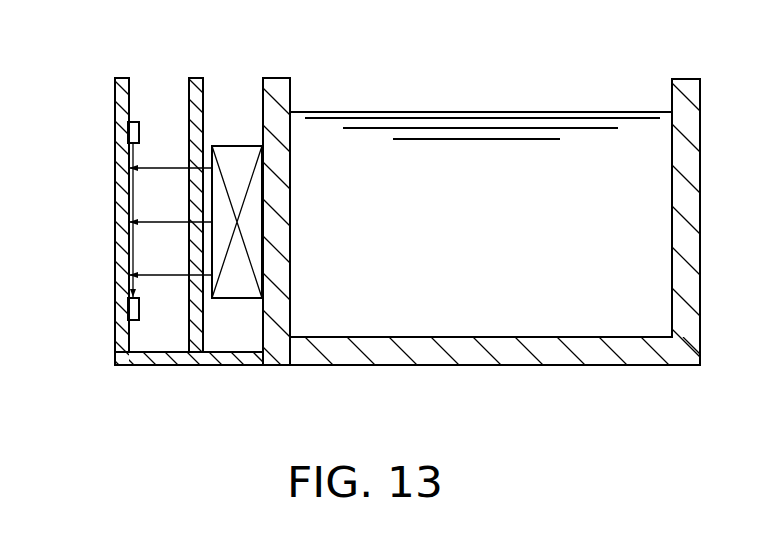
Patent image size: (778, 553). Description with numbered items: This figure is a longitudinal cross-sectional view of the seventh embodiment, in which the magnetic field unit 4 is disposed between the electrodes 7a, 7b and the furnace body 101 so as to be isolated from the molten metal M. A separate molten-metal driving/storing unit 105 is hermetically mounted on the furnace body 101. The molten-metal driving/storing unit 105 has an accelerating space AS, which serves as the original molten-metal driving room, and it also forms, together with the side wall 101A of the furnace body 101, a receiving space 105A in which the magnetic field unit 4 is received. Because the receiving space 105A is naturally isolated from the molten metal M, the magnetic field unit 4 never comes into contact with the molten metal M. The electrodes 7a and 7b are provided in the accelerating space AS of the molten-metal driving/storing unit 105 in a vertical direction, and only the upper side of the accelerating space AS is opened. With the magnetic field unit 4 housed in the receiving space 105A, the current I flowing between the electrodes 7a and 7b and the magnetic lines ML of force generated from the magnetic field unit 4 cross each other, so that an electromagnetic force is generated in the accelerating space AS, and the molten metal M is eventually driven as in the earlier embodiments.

The furnace body 101 is at (280, 78).
The side wall of the furnace body 101A is at (283, 111).
The magnetic field unit 4 is at (240, 146).
The electrode 7a is at (128, 133).
The electrode 7b is at (128, 318).
The molten-metal driving/storing unit 105 is at (115, 243).
The receiving space 105A is at (243, 356).
The current I is at (136, 158).
The magnetic lines of force ML is at (170, 222).
The accelerating space AS is at (163, 356).
The molten metal M is at (512, 266).